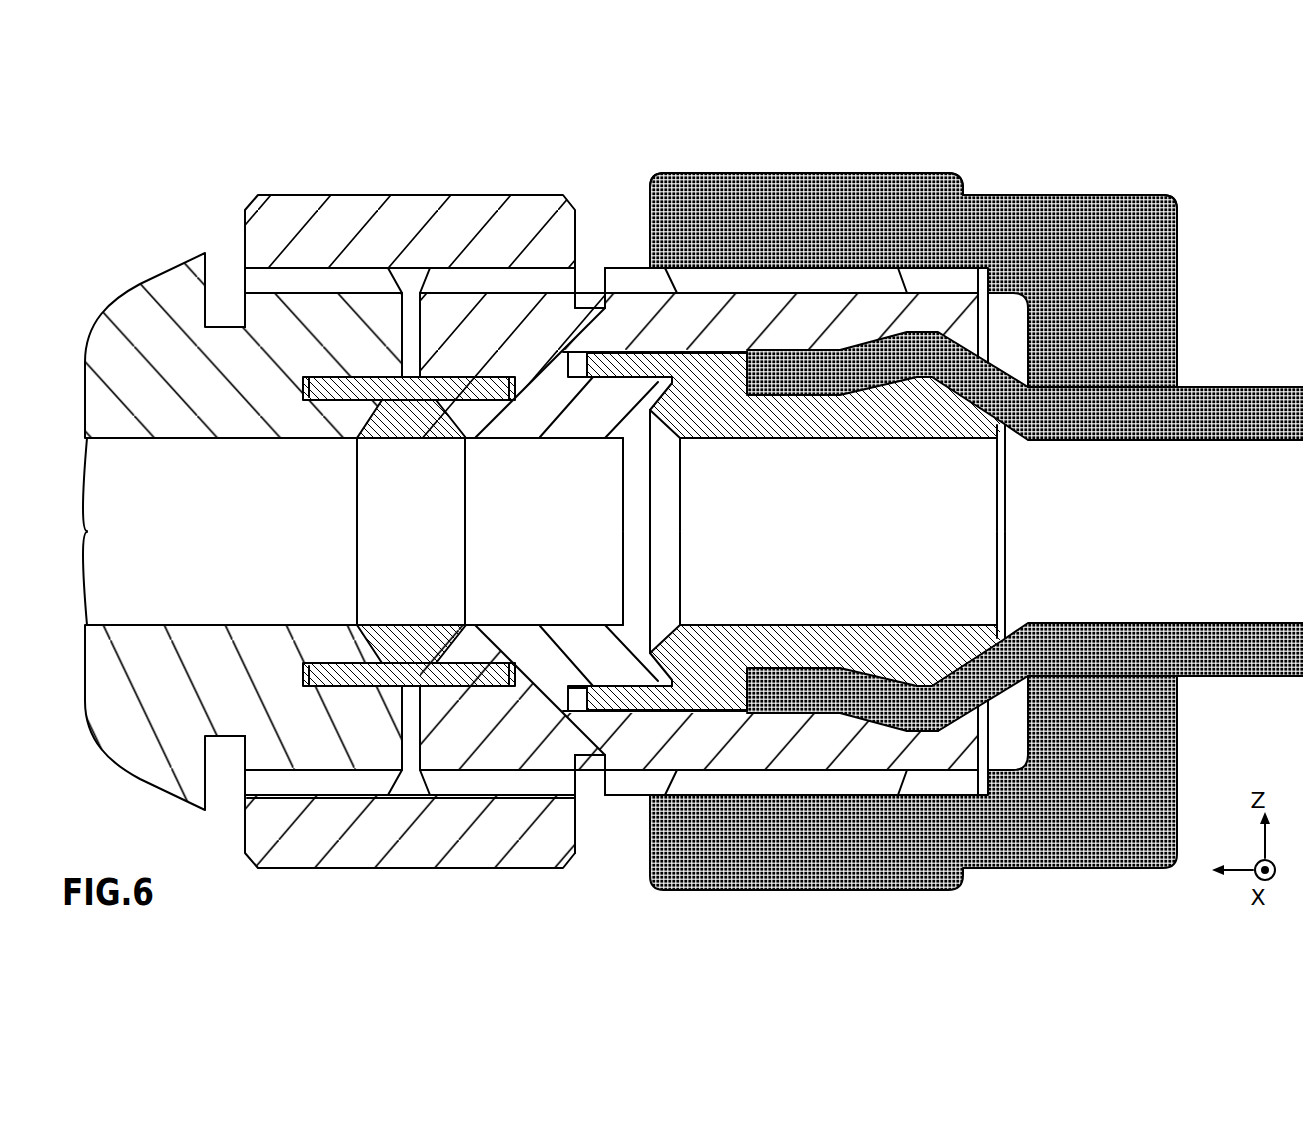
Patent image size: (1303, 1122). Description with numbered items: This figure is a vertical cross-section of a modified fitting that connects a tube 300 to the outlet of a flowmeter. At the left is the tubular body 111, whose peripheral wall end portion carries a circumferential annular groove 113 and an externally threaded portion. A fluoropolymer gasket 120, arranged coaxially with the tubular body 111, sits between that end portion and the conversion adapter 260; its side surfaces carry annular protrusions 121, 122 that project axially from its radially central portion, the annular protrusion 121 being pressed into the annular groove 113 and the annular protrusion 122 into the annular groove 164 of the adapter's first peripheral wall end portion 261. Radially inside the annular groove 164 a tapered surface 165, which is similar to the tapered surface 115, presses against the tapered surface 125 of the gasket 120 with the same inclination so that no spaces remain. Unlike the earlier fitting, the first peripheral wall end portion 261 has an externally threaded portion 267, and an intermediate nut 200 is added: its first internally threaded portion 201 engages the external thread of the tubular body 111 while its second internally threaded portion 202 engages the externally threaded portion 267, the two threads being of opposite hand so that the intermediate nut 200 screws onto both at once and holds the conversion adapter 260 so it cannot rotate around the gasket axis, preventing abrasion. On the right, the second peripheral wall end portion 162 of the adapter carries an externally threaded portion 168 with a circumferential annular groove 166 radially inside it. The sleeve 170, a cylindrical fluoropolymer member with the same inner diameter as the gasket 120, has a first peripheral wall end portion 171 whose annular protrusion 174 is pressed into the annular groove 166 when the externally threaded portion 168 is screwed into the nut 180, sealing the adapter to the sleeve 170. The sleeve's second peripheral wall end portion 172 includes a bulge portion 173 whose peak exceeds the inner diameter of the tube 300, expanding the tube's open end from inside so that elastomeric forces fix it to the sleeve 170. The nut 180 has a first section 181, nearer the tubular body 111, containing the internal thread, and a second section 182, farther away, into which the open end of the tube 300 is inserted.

The tubular body 111 is at (272, 284).
The annular groove 113 is at (270, 266).
The tapered surface 115 is at (372, 438).
The gasket 120 is at (412, 704).
The annular protrusion 121 is at (336, 372).
The annular protrusion 122 is at (486, 688).
The tapered surface 125 is at (357, 436).
The second peripheral wall end portion 162 is at (910, 160).
The annular groove 164 is at (568, 708).
The tapered surface 165 is at (452, 430).
The annular groove 166 is at (576, 778).
The externally threaded portion 168 is at (808, 773).
The sleeve 170 is at (648, 336).
The first peripheral wall end portion 171 is at (588, 453).
The second peripheral wall end portion 172 is at (743, 468).
The bulge portion 173 is at (936, 728).
The annular protrusion 174 is at (631, 712).
The nut 180 is at (1112, 182).
The first section 181 is at (975, 75).
The second section 182 is at (1175, 75).
The intermediate nut 200 is at (380, 184).
The first internally threaded portion 201 is at (265, 783).
The second internally threaded portion 202 is at (545, 785).
The conversion adapter 260 is at (591, 292).
The first peripheral wall end portion 261 is at (573, 160).
The externally threaded portion 267 is at (498, 290).
The tube 300 is at (962, 322).